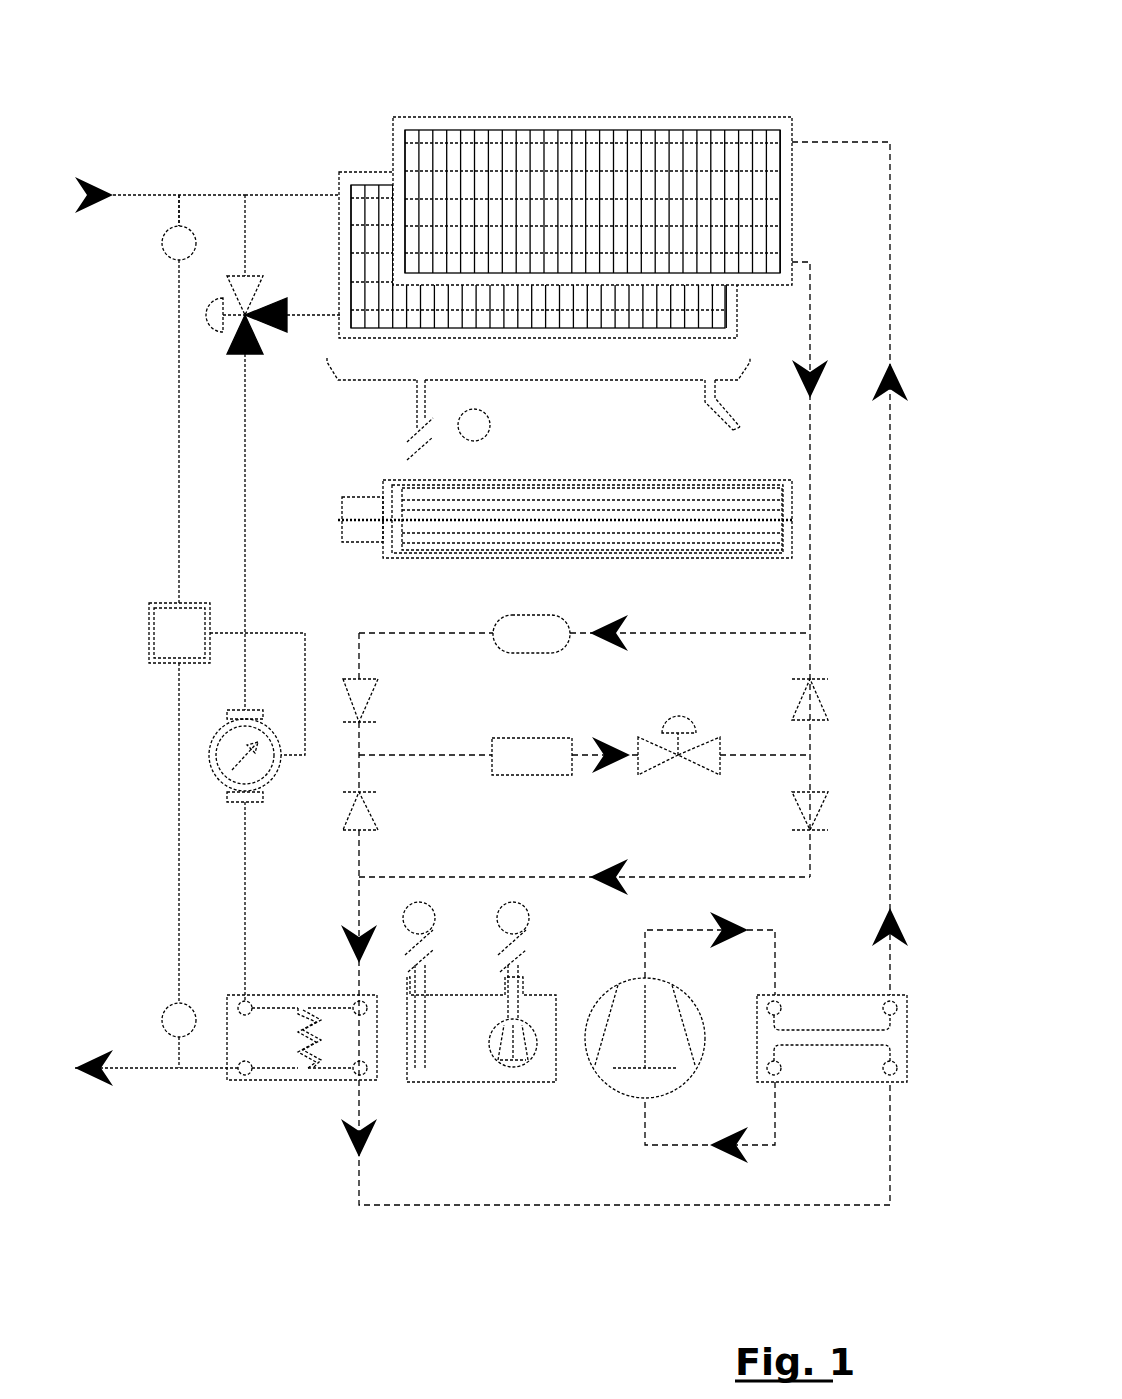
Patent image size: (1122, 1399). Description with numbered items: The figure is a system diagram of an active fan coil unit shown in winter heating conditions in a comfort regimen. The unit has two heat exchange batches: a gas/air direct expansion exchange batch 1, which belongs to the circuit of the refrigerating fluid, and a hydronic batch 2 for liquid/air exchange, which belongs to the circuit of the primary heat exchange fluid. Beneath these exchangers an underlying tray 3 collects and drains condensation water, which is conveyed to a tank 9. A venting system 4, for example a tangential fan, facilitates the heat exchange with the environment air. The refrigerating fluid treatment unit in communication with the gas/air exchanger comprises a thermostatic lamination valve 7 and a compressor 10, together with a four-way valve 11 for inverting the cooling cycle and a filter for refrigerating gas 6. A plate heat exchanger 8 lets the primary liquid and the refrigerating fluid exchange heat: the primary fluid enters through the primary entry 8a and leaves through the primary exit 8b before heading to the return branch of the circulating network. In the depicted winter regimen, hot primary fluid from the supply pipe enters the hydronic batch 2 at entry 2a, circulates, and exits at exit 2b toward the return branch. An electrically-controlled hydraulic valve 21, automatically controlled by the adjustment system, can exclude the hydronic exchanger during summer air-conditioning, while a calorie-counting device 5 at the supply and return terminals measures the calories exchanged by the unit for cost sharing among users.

The gas/air direct expansion exchange batch 1 is at (742, 105).
The hydronic batch 2 is at (366, 148).
The entry 2a is at (340, 195).
The exit 2b is at (343, 315).
The tray 3 is at (375, 420).
The venting system 4 is at (383, 550).
The calorie-counting device 5 is at (149, 627).
The filter for refrigerating gas 6 is at (520, 752).
The thermostatic lamination valve 7 is at (708, 722).
The plate heat exchanger 8 is at (239, 1036).
The primary entry 8a is at (250, 1005).
The primary exit 8b is at (252, 1070).
The tank 9 is at (455, 1093).
The compressor 10 is at (675, 1080).
The four-way valve 11 is at (895, 1040).
The electrically-controlled hydraulic valve 21 is at (222, 230).